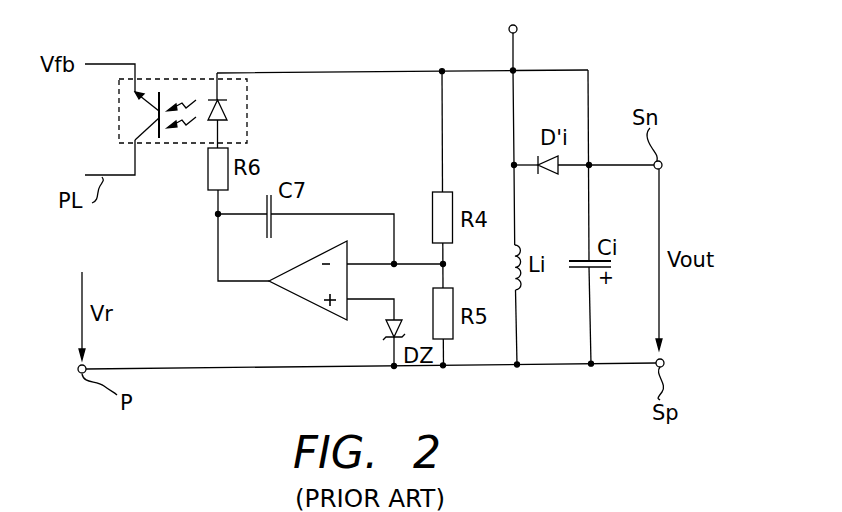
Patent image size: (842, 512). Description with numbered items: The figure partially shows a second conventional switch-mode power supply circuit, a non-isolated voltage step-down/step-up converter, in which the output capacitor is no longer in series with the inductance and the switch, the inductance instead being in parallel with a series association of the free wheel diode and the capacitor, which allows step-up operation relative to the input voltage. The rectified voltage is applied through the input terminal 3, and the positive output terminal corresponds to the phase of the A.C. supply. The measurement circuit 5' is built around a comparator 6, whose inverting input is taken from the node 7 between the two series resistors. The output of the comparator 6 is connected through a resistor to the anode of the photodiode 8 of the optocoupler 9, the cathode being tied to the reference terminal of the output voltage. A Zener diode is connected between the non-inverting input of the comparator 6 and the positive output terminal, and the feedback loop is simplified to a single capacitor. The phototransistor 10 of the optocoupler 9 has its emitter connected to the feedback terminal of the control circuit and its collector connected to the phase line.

The input terminal 3 is at (518, 28).
The measurement circuit 5' is at (166, 246).
The comparator 6 is at (300, 291).
The node 7 is at (446, 263).
The photodiode 8 is at (230, 104).
The optocoupler 9 is at (178, 132).
The phototransistor 10 is at (127, 112).